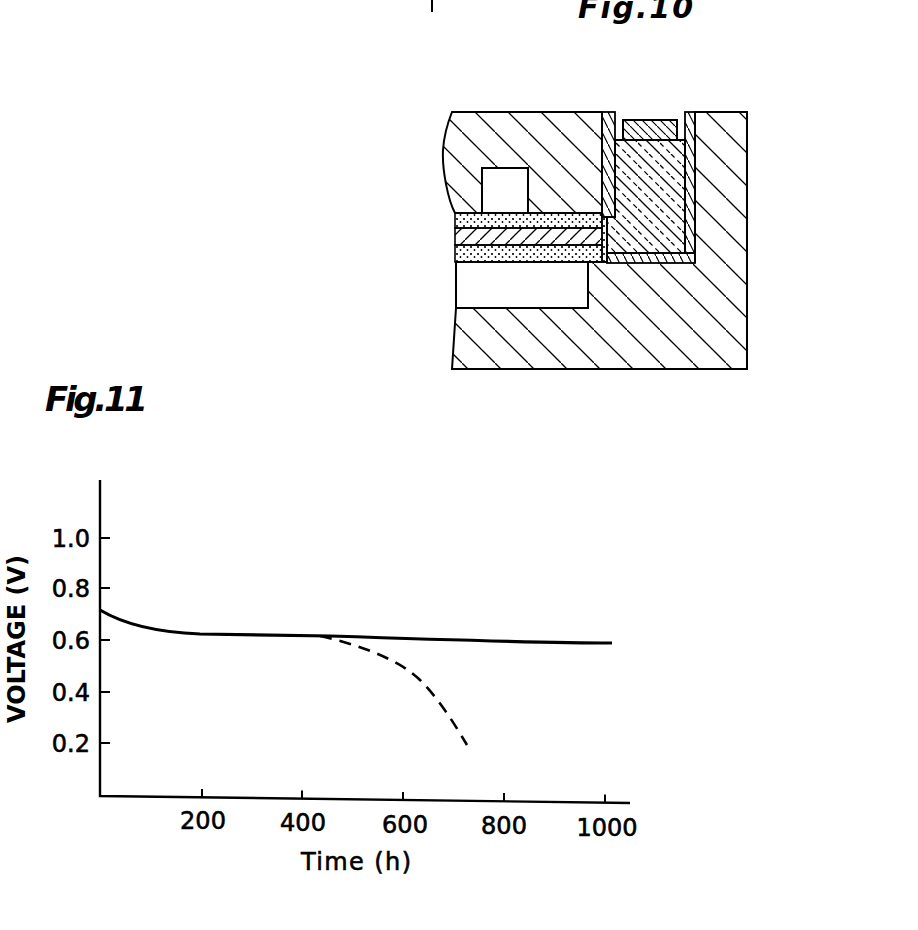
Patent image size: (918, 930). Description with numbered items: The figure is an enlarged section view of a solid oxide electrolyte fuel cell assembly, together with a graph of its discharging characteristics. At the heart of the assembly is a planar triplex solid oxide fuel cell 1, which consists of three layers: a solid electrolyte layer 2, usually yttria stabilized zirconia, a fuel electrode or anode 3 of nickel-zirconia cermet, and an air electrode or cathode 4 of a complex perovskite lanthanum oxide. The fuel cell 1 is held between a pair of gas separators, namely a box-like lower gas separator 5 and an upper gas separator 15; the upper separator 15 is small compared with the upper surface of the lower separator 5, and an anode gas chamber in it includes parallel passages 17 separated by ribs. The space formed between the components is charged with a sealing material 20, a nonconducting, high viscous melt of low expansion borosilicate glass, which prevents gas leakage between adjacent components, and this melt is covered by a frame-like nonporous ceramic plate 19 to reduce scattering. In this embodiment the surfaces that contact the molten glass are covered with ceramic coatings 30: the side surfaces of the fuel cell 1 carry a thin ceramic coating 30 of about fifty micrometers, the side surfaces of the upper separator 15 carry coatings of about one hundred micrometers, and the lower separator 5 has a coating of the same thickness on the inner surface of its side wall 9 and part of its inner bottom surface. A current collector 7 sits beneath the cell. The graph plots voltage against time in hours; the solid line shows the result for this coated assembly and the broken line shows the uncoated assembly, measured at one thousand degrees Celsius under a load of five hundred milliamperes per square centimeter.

The solid oxide fuel cell 1 is at (380, 178).
The solid electrolyte layer 2 is at (458, 238).
The fuel electrode or anode 3 is at (455, 216).
The air electrode or cathode 4 is at (452, 251).
The lower gas separator 5 is at (462, 347).
The anode current collector 7 is at (465, 292).
The side wall 9 is at (735, 206).
The upper gas separator 15 is at (485, 125).
The passages 17 is at (510, 190).
The frame-like nonporous ceramic plate 19 is at (650, 122).
The sealing material 20 is at (680, 242).
The ceramic coating 30 is at (608, 112).